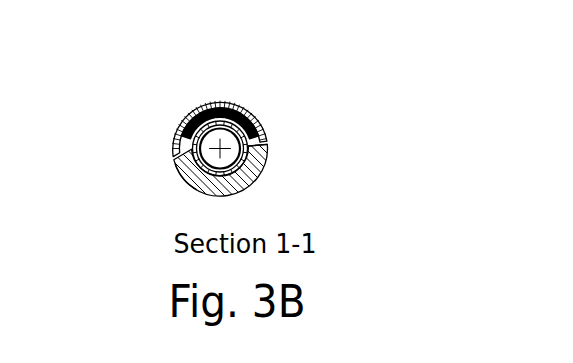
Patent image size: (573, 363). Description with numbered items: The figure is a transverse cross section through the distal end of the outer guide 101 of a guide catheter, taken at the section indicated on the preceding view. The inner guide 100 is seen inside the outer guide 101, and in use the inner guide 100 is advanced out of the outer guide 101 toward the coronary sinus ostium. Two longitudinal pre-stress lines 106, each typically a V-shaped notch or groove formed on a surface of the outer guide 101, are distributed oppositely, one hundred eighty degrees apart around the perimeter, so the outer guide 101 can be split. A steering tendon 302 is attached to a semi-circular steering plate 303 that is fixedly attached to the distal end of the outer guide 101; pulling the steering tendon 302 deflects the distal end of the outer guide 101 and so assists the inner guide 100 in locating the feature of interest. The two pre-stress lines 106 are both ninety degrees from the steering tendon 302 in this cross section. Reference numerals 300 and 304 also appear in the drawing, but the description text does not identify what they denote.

The inner guide 100 is at (194, 146).
The outer guide 101 is at (186, 183).
The longitudinal pre-stress line 106 is at (268, 148).
The clamp block 300 is at (242, 181).
The steering tendon 302 is at (226, 102).
The steering plate 303 is at (261, 124).
The piezoelectric element 304 is at (208, 133).